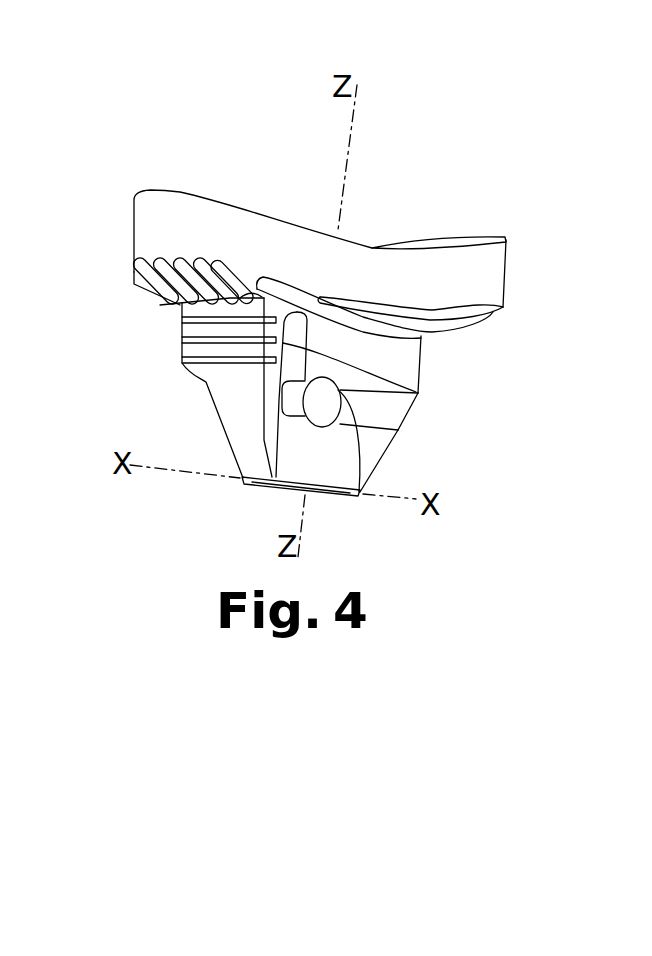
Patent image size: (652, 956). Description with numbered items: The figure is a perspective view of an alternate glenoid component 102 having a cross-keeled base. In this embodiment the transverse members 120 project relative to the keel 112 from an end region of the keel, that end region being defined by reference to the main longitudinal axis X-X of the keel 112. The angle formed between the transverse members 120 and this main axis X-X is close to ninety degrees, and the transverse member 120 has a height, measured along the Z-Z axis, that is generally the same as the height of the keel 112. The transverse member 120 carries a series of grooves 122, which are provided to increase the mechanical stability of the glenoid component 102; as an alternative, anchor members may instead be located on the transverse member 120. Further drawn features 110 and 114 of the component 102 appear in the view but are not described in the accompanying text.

The glenoid component 102 is at (398, 230).
The upper band / top portion 110 is at (524, 273).
The keel 112 is at (441, 361).
The base plate 114 is at (356, 494).
The transverse member 120 is at (180, 331).
The grooves 122 is at (182, 320).